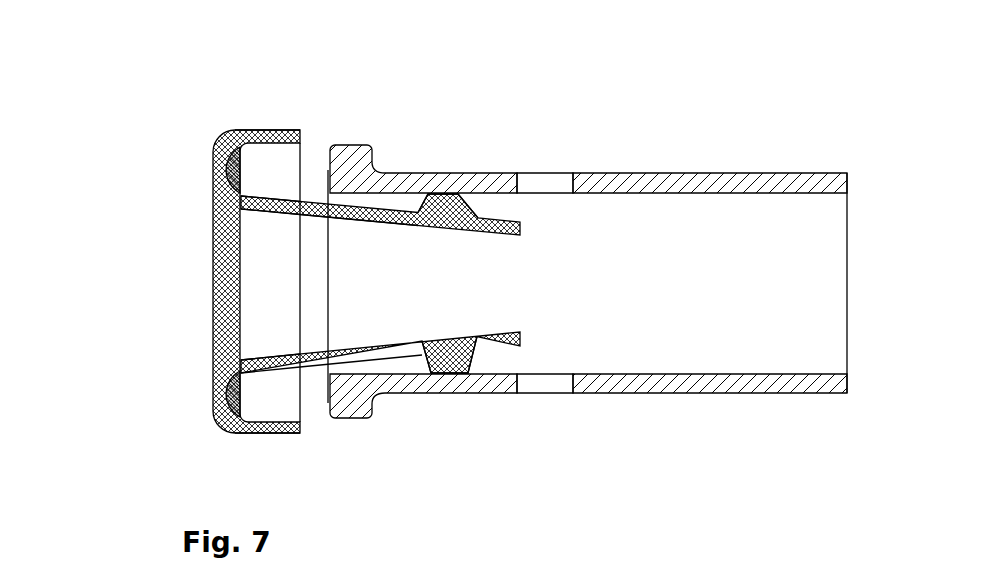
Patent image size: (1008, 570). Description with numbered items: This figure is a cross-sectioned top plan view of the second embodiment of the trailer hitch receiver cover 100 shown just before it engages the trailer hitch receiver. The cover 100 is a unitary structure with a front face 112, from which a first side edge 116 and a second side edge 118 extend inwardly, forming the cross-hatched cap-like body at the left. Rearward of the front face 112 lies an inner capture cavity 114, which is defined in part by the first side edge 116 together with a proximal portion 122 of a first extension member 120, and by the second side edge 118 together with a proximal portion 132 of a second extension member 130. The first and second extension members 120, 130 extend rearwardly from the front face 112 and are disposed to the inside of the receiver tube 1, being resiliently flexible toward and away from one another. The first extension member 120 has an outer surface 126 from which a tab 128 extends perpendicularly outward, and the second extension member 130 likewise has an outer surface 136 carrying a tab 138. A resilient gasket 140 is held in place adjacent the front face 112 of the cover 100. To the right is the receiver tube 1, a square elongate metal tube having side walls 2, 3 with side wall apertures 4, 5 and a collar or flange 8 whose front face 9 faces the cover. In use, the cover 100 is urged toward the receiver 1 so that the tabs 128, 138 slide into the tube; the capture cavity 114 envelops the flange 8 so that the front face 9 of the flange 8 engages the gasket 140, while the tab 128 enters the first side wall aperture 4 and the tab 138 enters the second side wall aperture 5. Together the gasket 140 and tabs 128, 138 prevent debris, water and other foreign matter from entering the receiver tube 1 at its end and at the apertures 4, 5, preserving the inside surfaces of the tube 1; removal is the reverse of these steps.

The trailer hitch receiver cover 100 is at (107, 112).
The receiver tube 1 is at (830, 289).
The side wall 2 is at (777, 177).
The side wall 3 is at (766, 383).
The first side wall aperture 4 is at (548, 182).
The second side wall aperture 5 is at (555, 386).
The flange 8 is at (355, 153).
The front face 9 is at (327, 170).
The front face 112 is at (213, 271).
The inner capture cavity 114 is at (277, 163).
The first side edge 116 is at (252, 130).
The second side edge 118 is at (257, 431).
The first extension member 120 is at (377, 220).
The proximal portion 122 is at (283, 212).
The outer surface 126 is at (388, 208).
The tab 128 is at (450, 199).
The second extension member 130 is at (382, 344).
The proximal portion 132 is at (298, 324).
The outer surface 136 is at (398, 355).
The tab 138 is at (455, 363).
The resilient gasket 140 is at (235, 168).